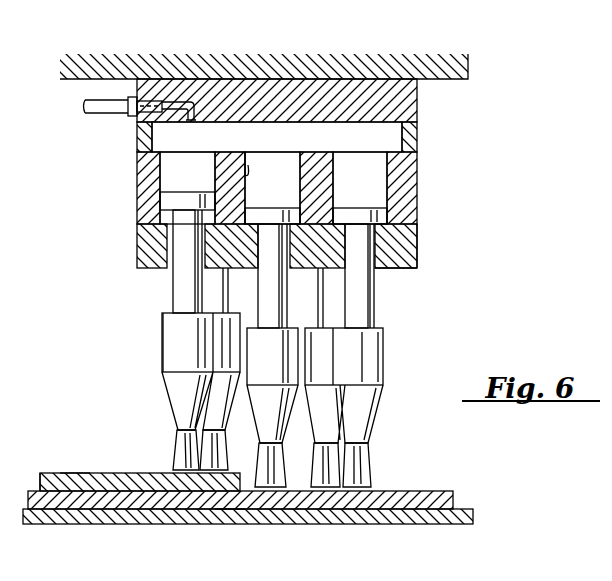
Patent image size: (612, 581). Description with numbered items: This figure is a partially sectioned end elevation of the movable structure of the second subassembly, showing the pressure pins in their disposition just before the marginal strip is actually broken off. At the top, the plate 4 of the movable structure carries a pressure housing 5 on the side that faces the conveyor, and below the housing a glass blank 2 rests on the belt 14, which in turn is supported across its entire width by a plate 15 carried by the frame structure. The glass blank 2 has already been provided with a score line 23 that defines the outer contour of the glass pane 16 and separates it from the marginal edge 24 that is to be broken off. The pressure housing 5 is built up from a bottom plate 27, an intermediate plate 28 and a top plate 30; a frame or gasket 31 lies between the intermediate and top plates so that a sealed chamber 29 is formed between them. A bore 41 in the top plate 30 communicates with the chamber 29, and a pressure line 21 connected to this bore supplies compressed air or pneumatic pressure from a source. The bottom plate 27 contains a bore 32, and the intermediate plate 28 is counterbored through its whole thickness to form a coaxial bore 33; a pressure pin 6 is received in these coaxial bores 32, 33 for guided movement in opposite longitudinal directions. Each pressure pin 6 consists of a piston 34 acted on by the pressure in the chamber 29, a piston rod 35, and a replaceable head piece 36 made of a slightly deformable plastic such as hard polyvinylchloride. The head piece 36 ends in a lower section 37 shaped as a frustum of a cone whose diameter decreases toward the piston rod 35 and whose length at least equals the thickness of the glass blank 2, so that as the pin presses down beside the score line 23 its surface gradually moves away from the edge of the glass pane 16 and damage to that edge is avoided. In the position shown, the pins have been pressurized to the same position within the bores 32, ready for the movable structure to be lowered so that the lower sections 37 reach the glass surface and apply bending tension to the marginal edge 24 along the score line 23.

The glass blank 2 is at (75, 462).
The plate 4 is at (228, 62).
The pressure housing 5 is at (396, 279).
The pressure pin 6 is at (160, 312).
The belt 14 is at (422, 492).
The plate 15 is at (440, 512).
The glass pane 16 is at (48, 473).
The pressure line 21 is at (100, 112).
The score line 23 is at (160, 473).
The marginal edge 24 is at (228, 520).
The bottom plate 27 is at (410, 246).
The intermediate plate 28 is at (412, 200).
The chamber 29 is at (306, 130).
The top plate 30 is at (398, 100).
The frame or gasket 31 is at (410, 136).
The bore 32 is at (175, 260).
The bore 33 is at (170, 172).
The piston 34 is at (170, 204).
The piston rod 35 is at (180, 293).
The head piece 36 is at (160, 345).
The lower section 37 is at (185, 458).
The bore 41 is at (192, 118).